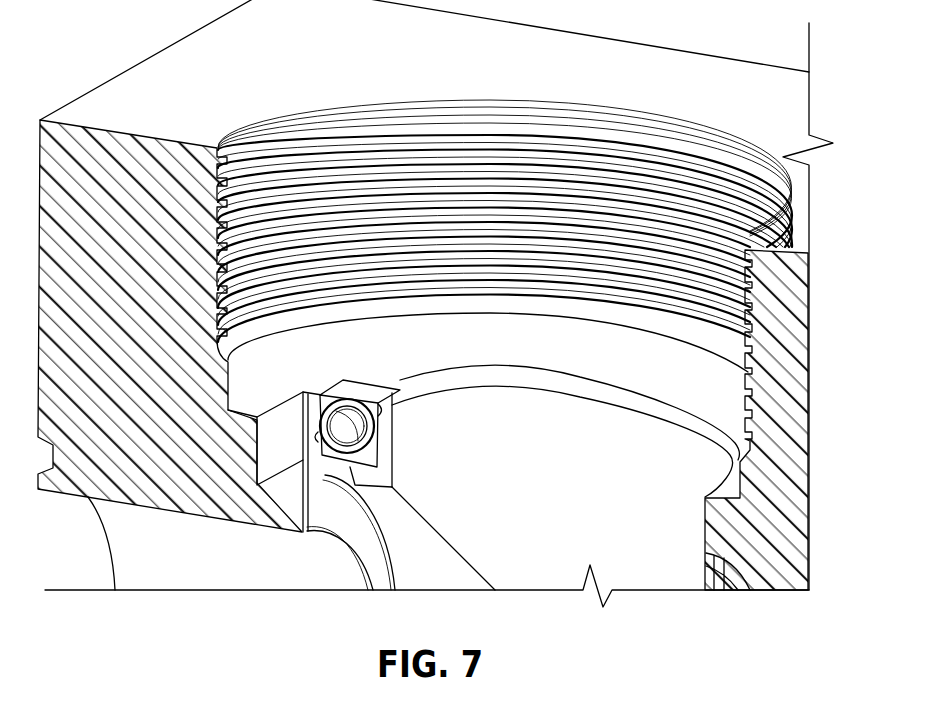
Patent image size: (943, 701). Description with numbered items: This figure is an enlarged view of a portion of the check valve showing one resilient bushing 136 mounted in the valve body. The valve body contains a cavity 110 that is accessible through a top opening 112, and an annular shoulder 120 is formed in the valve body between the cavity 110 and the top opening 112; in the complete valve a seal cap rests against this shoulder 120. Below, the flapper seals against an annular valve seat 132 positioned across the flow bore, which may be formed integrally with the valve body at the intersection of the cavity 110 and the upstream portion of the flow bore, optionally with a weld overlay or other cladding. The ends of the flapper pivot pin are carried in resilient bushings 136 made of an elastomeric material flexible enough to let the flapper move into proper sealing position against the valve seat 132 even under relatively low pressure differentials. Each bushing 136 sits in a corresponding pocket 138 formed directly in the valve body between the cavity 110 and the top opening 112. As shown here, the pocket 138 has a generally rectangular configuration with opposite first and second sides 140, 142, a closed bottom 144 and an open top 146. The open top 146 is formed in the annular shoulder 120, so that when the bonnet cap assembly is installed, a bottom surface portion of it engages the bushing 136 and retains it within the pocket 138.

The cavity 110 is at (606, 493).
The top opening 112 is at (276, 135).
The annular shoulder 120 is at (503, 377).
The annular valve seat 132 is at (383, 560).
The resilient bushing 136 is at (349, 386).
The pocket 138 is at (347, 385).
The first side 140 is at (322, 433).
The second side 142 is at (390, 442).
The closed bottom 144 is at (353, 462).
The open top 146 is at (396, 391).